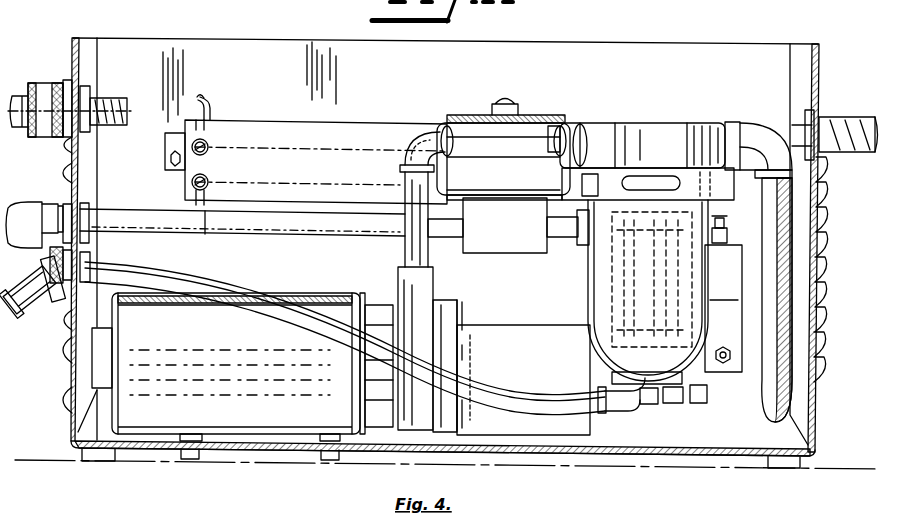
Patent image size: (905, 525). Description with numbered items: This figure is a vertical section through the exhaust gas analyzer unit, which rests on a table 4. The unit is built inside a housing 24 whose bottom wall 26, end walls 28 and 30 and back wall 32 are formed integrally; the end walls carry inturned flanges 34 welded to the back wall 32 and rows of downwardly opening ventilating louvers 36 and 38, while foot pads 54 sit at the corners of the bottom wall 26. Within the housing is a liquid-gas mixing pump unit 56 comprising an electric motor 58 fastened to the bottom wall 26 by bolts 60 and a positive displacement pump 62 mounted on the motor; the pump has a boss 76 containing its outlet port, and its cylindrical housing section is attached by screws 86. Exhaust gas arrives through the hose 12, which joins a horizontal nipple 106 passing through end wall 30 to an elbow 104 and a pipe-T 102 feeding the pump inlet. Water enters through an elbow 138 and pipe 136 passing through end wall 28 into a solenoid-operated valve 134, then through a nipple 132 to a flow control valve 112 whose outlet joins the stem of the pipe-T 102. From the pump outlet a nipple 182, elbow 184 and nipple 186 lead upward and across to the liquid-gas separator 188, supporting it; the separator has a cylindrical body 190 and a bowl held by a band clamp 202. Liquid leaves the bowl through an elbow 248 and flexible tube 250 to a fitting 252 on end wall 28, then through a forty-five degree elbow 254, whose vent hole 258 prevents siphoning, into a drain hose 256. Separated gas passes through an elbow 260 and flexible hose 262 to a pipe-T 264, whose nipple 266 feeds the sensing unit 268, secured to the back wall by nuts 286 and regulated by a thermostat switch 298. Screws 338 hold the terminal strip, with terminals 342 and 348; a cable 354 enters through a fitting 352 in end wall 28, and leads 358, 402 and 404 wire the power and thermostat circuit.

The table 4 is at (70, 456).
The hose 12 is at (862, 118).
The housing 24 is at (214, 37).
The bottom wall 26 is at (566, 450).
The end wall 28 is at (76, 62).
The end wall 30 is at (816, 54).
The back wall 32 is at (538, 55).
The inturned flanges 34 is at (88, 52).
The ventilating louvers 36 is at (66, 372).
The ventilating louvers 38 is at (822, 186).
The foot pads 54 is at (105, 452).
The liquid-gas mixing pump unit 56 is at (315, 282).
The electric motor 58 is at (226, 367).
The bolts 60 is at (190, 459).
The positive displacement pump 62 is at (500, 324).
The boss 76 is at (432, 290).
The screws 86 is at (463, 360).
The pipe-T 102 is at (648, 184).
The elbow 104 is at (693, 128).
The horizontal nipple 106 is at (780, 125).
The flow control valve 112 is at (585, 246).
The nipple 132 is at (562, 229).
The solenoid-operated valve 134 is at (480, 243).
The pipe 136 is at (206, 226).
The elbow 138 is at (25, 202).
The nipple 182 is at (407, 183).
The elbow 184 is at (420, 128).
The nipple 186 is at (480, 148).
The liquid-gas separator 188 is at (605, 125).
The cylindrical body 190 is at (625, 123).
The band clamp 202 is at (636, 145).
The elbow 248 is at (618, 404).
The flexible tube 250 is at (240, 278).
The fitting 252 is at (92, 262).
The 45° elbow 254 is at (56, 298).
The hose 256 is at (26, 296).
The vent hole 258 is at (242, 223).
The elbow 260 is at (742, 124).
The flexible hose 262 is at (790, 385).
The pipe-T 264 is at (718, 344).
The nipple 266 is at (735, 229).
The sensing unit 268 is at (648, 300).
The nuts 286 is at (720, 372).
The thermostat switch 298 is at (704, 404).
The screws 338 is at (166, 164).
The terminal 342 is at (213, 147).
The terminal 348 is at (350, 133).
The fitting 352 is at (45, 95).
The cable 354 is at (106, 103).
The lead 358 is at (207, 100).
The lead 402 is at (210, 186).
The lead 404 is at (676, 404).